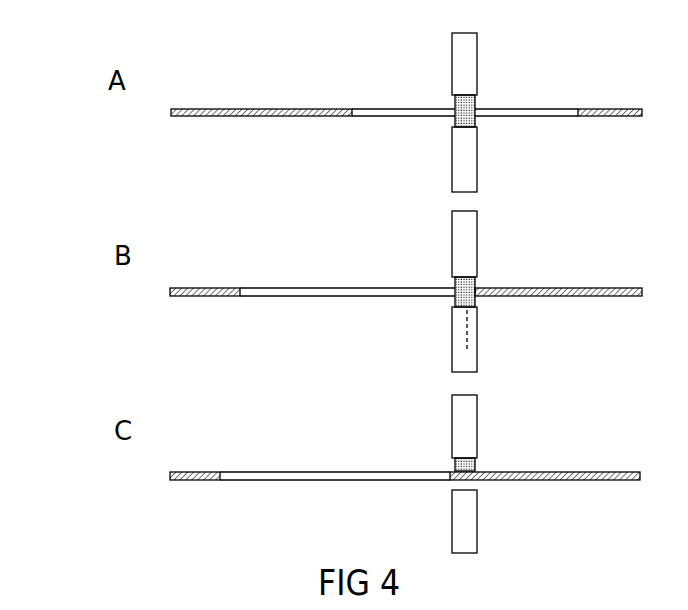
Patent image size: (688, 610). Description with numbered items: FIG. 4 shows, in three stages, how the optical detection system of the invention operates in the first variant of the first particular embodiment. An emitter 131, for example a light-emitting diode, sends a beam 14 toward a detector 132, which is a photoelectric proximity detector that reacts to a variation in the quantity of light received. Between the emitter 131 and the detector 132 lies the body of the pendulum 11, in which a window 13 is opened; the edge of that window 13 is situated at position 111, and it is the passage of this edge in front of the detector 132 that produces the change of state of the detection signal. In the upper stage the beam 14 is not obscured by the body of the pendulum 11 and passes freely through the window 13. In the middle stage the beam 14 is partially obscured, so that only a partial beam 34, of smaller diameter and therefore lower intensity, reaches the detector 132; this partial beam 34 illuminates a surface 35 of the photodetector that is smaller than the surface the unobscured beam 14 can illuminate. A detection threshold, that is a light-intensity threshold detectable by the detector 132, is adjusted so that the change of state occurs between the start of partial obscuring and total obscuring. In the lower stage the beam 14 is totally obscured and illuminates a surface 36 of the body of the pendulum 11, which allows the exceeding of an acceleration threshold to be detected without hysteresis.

The pendulum 11 is at (261, 78).
The window 13 is at (390, 78).
The position 111 is at (580, 102).
The emitter 131 is at (471, 48).
The detector 132 is at (471, 145).
The beam 14 is at (510, 96).
The partial beam 34 is at (522, 278).
The surface of a photodetector 35 is at (423, 343).
The surface of the body of the pendulum 36 is at (517, 452).